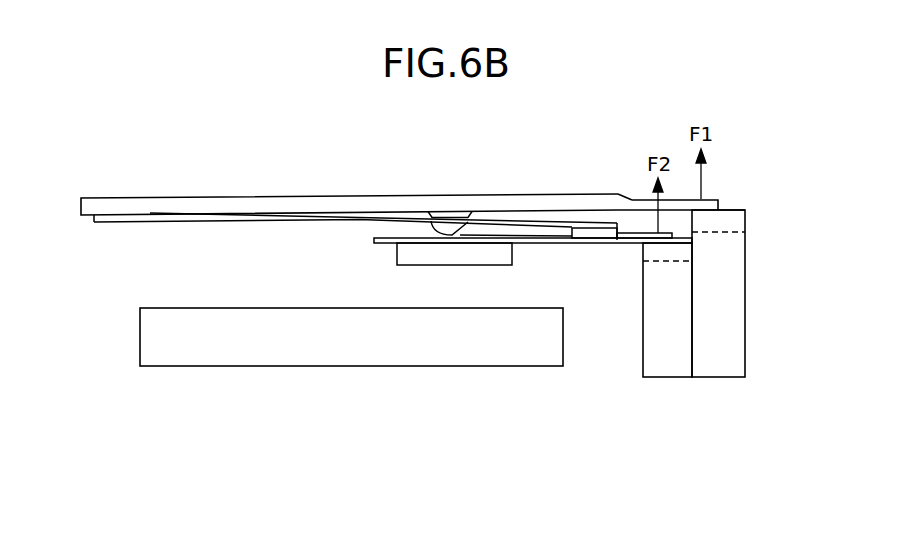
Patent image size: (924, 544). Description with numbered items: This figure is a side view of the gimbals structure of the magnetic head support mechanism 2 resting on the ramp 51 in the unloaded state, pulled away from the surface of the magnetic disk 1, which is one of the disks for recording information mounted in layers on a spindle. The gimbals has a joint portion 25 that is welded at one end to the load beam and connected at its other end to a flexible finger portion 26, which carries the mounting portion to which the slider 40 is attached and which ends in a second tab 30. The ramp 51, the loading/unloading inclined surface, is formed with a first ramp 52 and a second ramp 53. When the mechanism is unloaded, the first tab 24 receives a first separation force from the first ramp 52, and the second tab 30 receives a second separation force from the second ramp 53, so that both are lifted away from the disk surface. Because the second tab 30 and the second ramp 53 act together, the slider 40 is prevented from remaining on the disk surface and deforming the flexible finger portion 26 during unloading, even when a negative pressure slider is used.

The magnetic disk 1 is at (267, 359).
The magnetic head support mechanism 2 is at (276, 186).
The first tab 24 is at (711, 207).
The joint portion 25 is at (183, 217).
The flexible finger portion 26 is at (343, 220).
The second tab 30 is at (638, 240).
The slider 40 is at (428, 262).
The ramp 51 is at (668, 372).
The first ramp 52 is at (734, 222).
The second ramp 53 is at (652, 247).